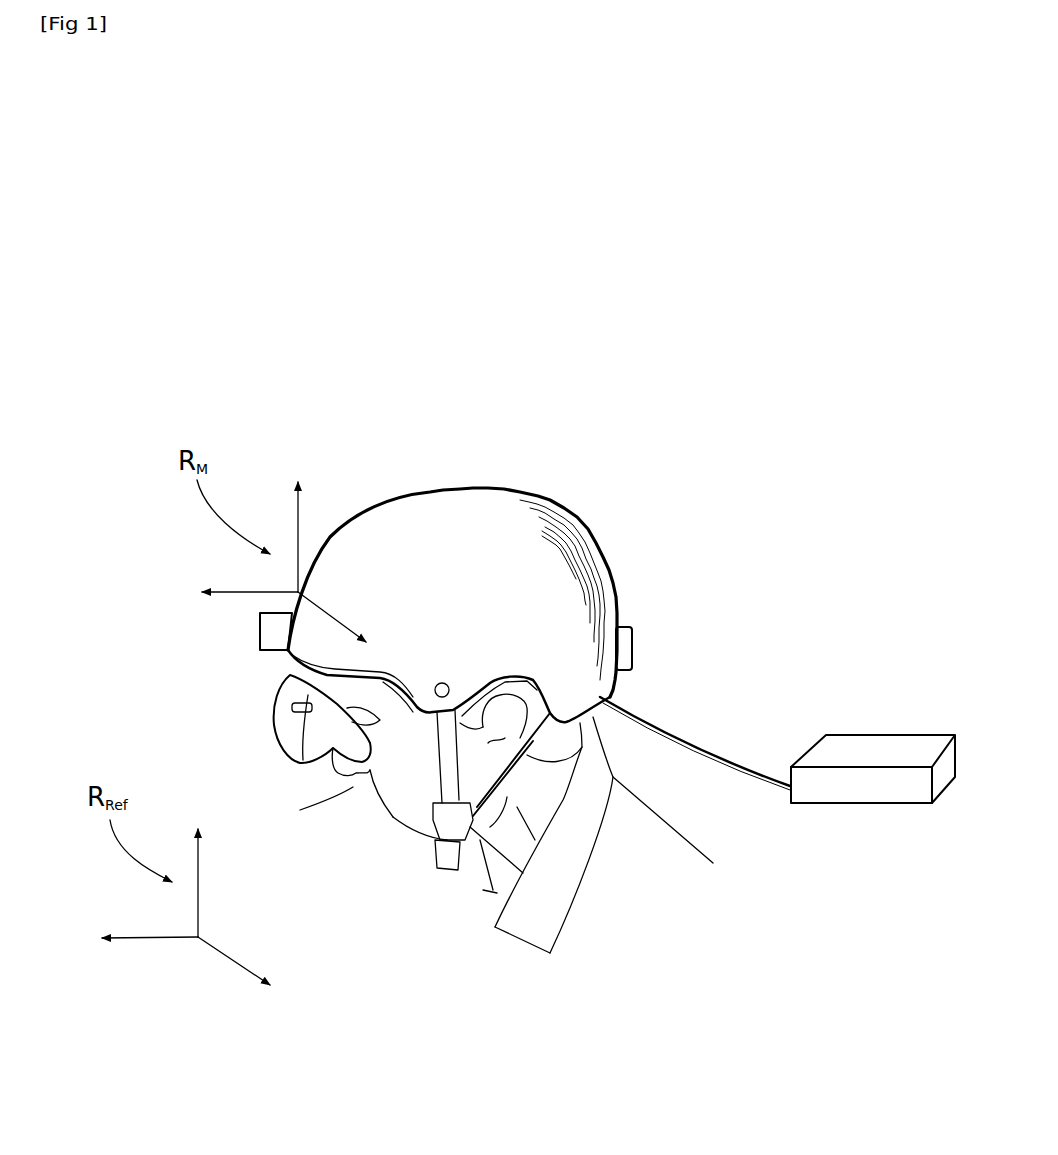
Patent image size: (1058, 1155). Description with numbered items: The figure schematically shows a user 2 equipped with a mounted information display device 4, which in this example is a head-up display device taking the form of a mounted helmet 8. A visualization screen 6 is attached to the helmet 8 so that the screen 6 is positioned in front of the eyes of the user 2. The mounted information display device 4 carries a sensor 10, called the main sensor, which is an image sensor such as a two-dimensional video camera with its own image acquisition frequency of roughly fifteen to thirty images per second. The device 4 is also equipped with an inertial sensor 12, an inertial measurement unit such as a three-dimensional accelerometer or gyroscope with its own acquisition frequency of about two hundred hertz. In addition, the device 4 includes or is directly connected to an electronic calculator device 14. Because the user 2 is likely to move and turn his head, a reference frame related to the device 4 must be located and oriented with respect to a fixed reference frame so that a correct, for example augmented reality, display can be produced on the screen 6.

The user 2 is at (439, 648).
The mounted information display device 4 is at (246, 688).
The visualization screen 6 is at (355, 772).
The mounted helmet 8 is at (412, 540).
The sensor 10 is at (262, 632).
The inertial sensor 12 is at (634, 655).
The electronic calculator device 14 is at (880, 785).